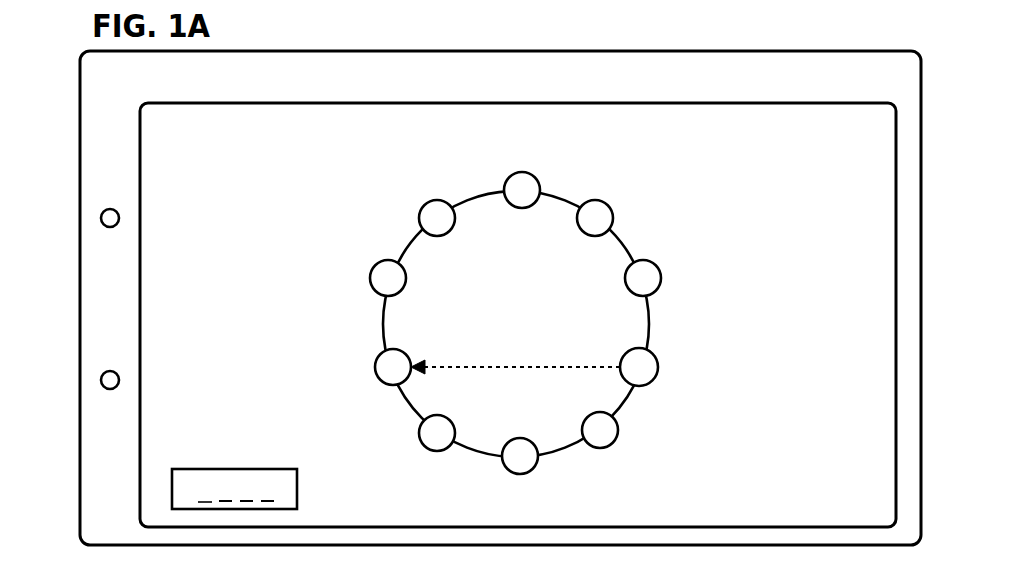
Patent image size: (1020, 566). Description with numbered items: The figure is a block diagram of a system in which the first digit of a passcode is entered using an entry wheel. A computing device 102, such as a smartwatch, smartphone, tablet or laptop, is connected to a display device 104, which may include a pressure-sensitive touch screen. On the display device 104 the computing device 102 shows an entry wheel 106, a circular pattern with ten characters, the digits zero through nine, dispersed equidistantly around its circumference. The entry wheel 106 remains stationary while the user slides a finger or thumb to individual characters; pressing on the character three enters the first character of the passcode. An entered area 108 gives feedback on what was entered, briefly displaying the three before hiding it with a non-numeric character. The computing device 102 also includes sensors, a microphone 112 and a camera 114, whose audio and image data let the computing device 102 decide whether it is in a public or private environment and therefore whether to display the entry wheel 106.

The computing device 102 is at (620, 84).
The display device 104 is at (352, 136).
The entry wheel 106 is at (627, 243).
The entered area 108 is at (199, 469).
The microphone 112 is at (101, 216).
The camera 114 is at (101, 377).